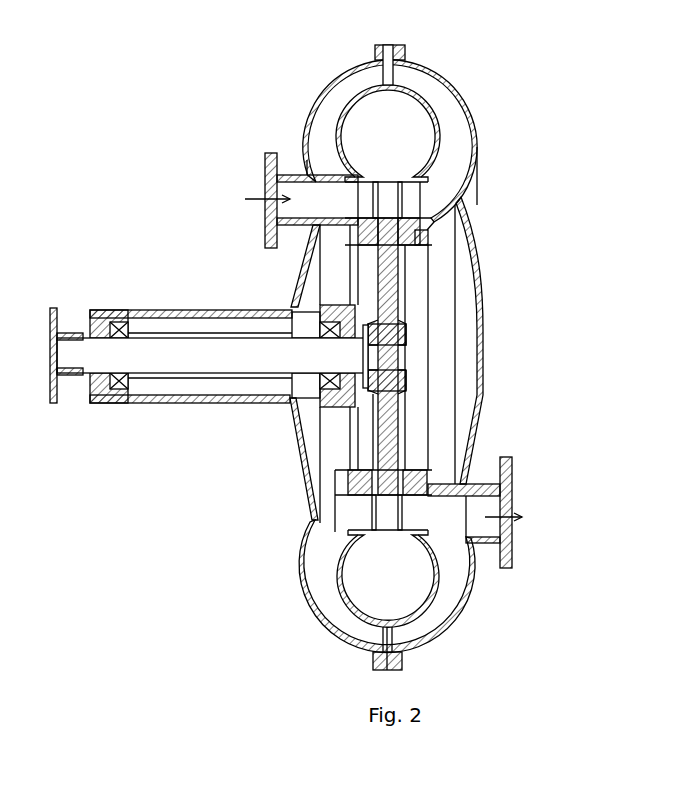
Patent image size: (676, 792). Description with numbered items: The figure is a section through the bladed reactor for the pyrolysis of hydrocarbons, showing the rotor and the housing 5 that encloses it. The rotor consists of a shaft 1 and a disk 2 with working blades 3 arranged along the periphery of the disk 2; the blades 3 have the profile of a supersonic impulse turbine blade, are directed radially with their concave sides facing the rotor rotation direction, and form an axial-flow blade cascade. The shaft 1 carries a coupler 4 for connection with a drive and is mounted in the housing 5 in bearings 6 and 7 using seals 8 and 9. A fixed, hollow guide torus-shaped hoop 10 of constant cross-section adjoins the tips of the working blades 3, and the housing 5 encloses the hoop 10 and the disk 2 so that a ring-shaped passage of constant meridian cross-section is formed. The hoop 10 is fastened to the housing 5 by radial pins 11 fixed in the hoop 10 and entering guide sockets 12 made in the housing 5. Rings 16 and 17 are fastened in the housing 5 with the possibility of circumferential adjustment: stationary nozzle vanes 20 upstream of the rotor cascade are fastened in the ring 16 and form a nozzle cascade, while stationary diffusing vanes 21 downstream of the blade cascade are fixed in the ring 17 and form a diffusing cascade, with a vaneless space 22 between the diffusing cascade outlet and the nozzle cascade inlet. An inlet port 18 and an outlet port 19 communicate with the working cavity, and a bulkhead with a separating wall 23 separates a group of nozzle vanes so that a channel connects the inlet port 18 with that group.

The shaft 1 is at (215, 373).
The disk 2 is at (392, 302).
The working blades 3 is at (390, 195).
The coupler 4 is at (55, 308).
The housing 5 is at (330, 83).
The bearing 6 is at (125, 313).
The bearing 7 is at (290, 410).
The seal 8 is at (92, 403).
The seal 9 is at (330, 312).
The guide torus-shaped hoop 10 is at (342, 603).
The radial pins 11 is at (390, 82).
The guide sockets 12 is at (396, 50).
The ring 16 is at (348, 470).
The ring 17 is at (427, 245).
The inlet port 18 is at (267, 173).
The outlet port 19 is at (492, 509).
The stationary nozzle vanes 20 is at (362, 520).
The stationary diffusing vanes 21 is at (425, 215).
The vaneless space 22 is at (447, 123).
The separating wall 23 is at (330, 173).